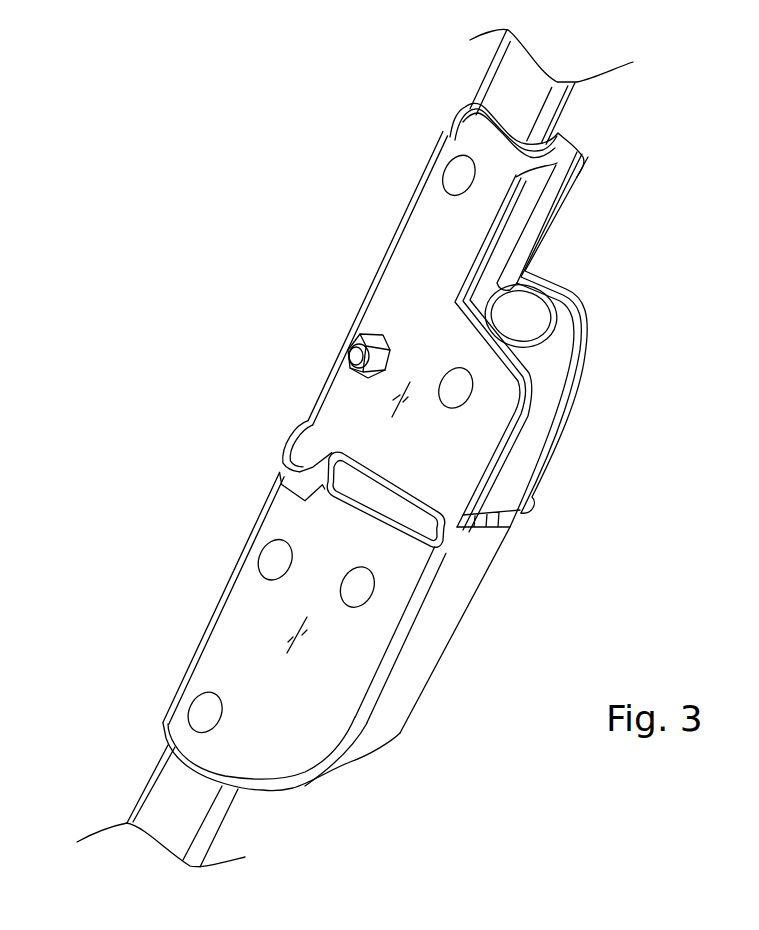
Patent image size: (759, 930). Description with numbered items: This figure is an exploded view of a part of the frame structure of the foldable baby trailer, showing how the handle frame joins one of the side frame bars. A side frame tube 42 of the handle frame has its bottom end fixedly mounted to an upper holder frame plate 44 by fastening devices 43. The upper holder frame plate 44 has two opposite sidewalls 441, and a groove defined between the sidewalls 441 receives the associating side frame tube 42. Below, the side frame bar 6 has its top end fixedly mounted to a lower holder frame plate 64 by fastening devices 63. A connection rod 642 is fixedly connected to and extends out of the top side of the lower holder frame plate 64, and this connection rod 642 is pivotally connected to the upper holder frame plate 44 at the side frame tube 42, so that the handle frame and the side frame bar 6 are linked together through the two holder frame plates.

The side frame tube 42 is at (572, 103).
The fastening devices 43 is at (457, 170).
The upper holder frame plate 44 is at (380, 263).
The sidewalls 441 is at (487, 375).
The connection rod 642 is at (535, 368).
The fastening devices 63 is at (260, 548).
The lower holder frame plate 64 is at (217, 593).
The side frame bar 6 is at (147, 767).